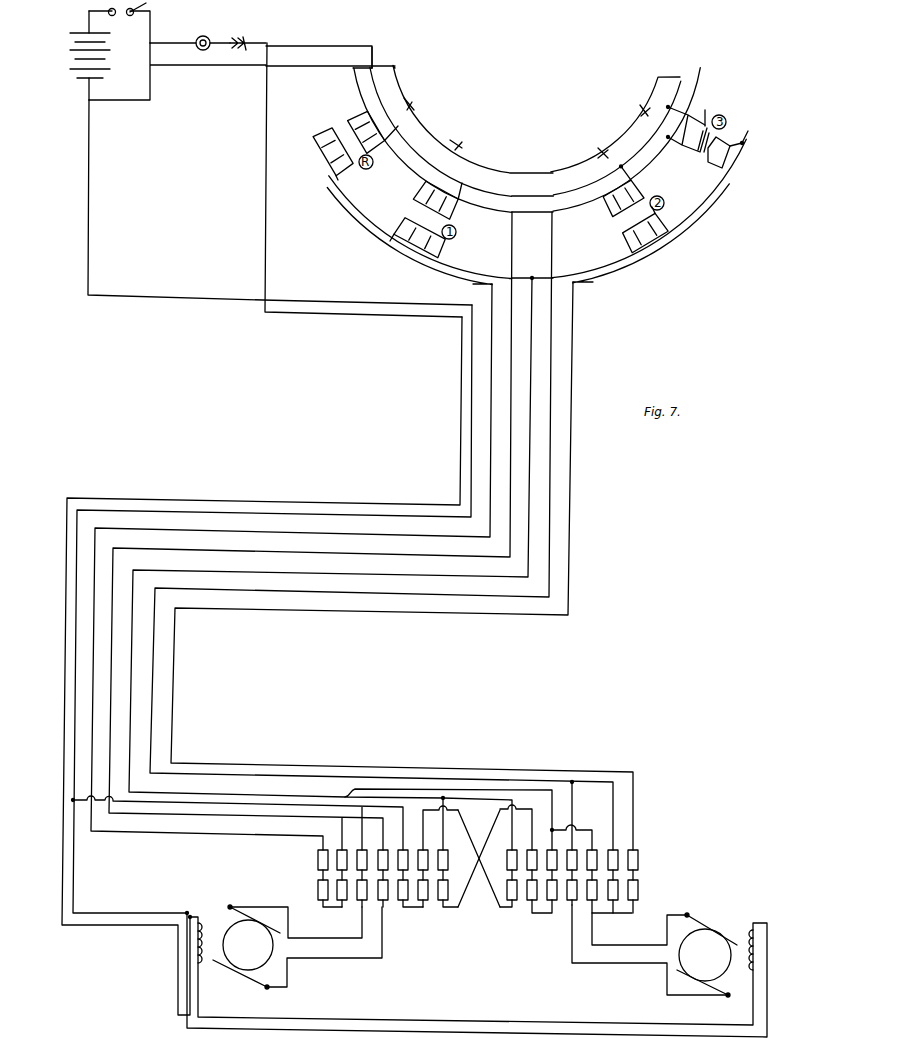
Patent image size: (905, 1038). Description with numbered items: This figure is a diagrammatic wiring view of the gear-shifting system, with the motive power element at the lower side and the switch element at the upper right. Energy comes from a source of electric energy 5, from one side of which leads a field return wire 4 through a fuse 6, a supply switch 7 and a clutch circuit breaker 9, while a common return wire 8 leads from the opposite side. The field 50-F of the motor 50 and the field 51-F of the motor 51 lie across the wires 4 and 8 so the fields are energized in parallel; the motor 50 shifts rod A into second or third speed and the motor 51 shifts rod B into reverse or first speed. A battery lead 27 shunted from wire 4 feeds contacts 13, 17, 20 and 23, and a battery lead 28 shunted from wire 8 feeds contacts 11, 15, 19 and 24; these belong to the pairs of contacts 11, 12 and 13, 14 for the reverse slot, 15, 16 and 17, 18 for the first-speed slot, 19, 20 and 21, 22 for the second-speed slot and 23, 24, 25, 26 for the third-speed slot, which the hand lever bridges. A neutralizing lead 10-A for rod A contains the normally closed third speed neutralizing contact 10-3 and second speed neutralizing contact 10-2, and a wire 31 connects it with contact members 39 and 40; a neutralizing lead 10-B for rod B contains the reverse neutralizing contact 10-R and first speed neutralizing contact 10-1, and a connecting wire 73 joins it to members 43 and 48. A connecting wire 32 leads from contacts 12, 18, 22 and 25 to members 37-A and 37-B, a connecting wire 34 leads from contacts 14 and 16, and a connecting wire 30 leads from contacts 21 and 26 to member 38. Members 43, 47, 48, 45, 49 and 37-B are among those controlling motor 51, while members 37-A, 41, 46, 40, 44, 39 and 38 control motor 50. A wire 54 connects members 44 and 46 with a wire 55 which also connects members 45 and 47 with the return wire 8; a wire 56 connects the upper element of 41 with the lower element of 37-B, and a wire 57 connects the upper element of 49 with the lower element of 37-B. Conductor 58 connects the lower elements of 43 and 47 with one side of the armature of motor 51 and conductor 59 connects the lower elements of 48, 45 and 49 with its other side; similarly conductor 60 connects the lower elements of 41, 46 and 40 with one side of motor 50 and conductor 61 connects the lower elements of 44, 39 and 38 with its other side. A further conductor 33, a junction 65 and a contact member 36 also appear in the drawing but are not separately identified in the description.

The source of electric energy 5 is at (70, 62).
The fuse 6 is at (119, 21).
The supply switch 7 is at (204, 36).
The clutch circuit breaker 9 is at (245, 38).
The battery lead 27 is at (316, 46).
The battery lead 28 is at (178, 67).
The common return wire 8 is at (89, 210).
The field return wire 4 is at (265, 221).
The neutralizing lead for rod B 10-B is at (473, 120).
The neutralizing lead for rod A 10-A is at (616, 128).
The reverse neutralizing contact 10-R is at (416, 105).
The first speed neutralizing contact 10-1 is at (453, 140).
The second speed neutralizing contact 10-2 is at (626, 140).
The third speed neutralizing contact 10-3 is at (649, 190).
The contact 11 is at (366, 132).
The contact 12 is at (333, 152).
The contact 13 is at (382, 136).
The contact 14 is at (338, 166).
The contact 15 is at (435, 200).
The contact 16 is at (419, 238).
The contact 17 is at (450, 197).
The contact 18 is at (413, 242).
The contact 19 is at (623, 198).
The contact 20 is at (630, 182).
The contact 21 is at (655, 221).
The contact 22 is at (646, 232).
The contact 23 is at (710, 109).
The contact 24 is at (688, 129).
The contact 25 is at (740, 131).
The contact 26 is at (719, 152).
The connecting wire 30 is at (571, 345).
The wire 31 is at (551, 370).
The connecting wire 32 is at (530, 405).
The conductor 33 is at (472, 376).
The connecting wire 34 is at (490, 402).
The connecting wire 73 is at (512, 430).
The wire 54 is at (70, 802).
The wire 55 is at (540, 789).
The junction 65 is at (345, 800).
The wire 56 is at (472, 905).
The wire 57 is at (487, 907).
The contact member 43 is at (330, 878).
The contact member 45 is at (345, 878).
The contact member 47 is at (365, 878).
The contact member 49 is at (386, 878).
The contact member 46 is at (410, 878).
The contact member 48 is at (426, 878).
The contact member 37-B is at (451, 852).
The contact member 37-A is at (516, 878).
The contact member 41 is at (539, 881).
The contact member 38 is at (555, 875).
The contact member 40 is at (575, 877).
The contact member 44 is at (609, 881).
The contact member 39 is at (616, 881).
The resistor 36 is at (636, 881).
The motor 51 is at (227, 940).
The conductor 58 is at (322, 938).
The conductor 59 is at (337, 958).
The field of motor 51 51-F is at (197, 955).
The motor 50 is at (732, 950).
The conductor 61 is at (610, 945).
The conductor 60 is at (598, 960).
The field of motor 50 50-F is at (776, 950).